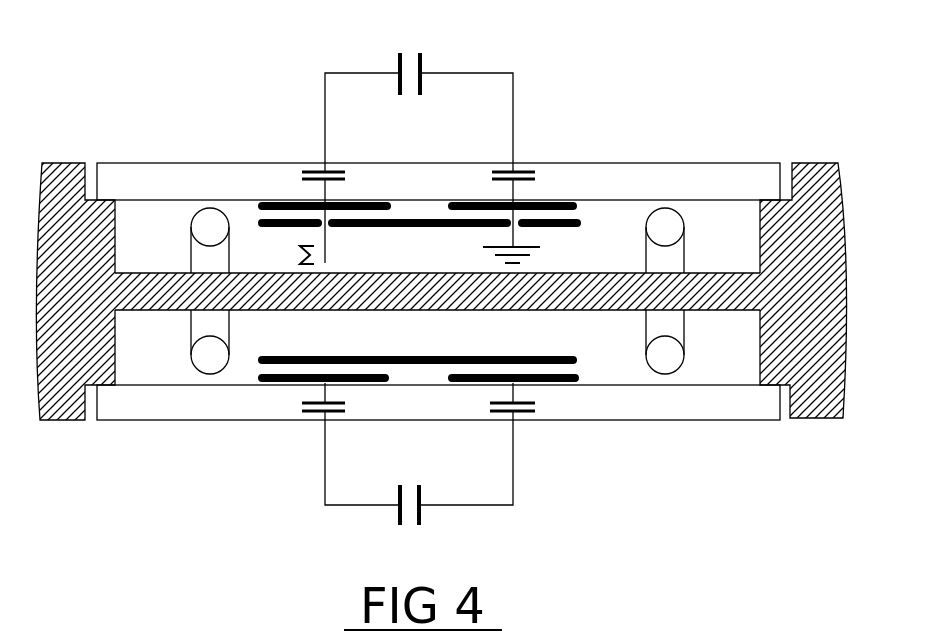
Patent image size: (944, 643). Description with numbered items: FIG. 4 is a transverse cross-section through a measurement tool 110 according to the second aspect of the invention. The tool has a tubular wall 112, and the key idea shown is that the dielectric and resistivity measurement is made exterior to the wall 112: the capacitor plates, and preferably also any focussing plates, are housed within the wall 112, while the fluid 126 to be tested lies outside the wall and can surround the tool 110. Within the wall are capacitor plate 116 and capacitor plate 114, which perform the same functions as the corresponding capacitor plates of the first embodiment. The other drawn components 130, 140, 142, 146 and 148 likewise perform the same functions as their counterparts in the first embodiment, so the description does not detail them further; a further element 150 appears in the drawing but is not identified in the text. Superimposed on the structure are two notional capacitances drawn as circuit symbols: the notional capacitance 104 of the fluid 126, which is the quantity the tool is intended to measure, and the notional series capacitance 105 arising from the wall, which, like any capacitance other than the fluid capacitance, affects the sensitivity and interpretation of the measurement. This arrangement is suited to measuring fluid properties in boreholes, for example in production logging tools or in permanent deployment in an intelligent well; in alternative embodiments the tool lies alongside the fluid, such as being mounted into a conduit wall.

The measurement tool 110 is at (441, 218).
The notional capacitance of the fluid 104 is at (406, 491).
The notional series capacitance 105 is at (391, 223).
The wall 112 is at (461, 133).
The capacitor plate 114 is at (527, 158).
The capacitor plate 116 is at (360, 158).
The fluid 126 is at (462, 93).
The component 130 is at (434, 421).
The component 140 is at (194, 360).
The component 142 is at (659, 360).
The component 146 is at (819, 337).
The component 148 is at (71, 337).
The central beam 150 is at (437, 205).